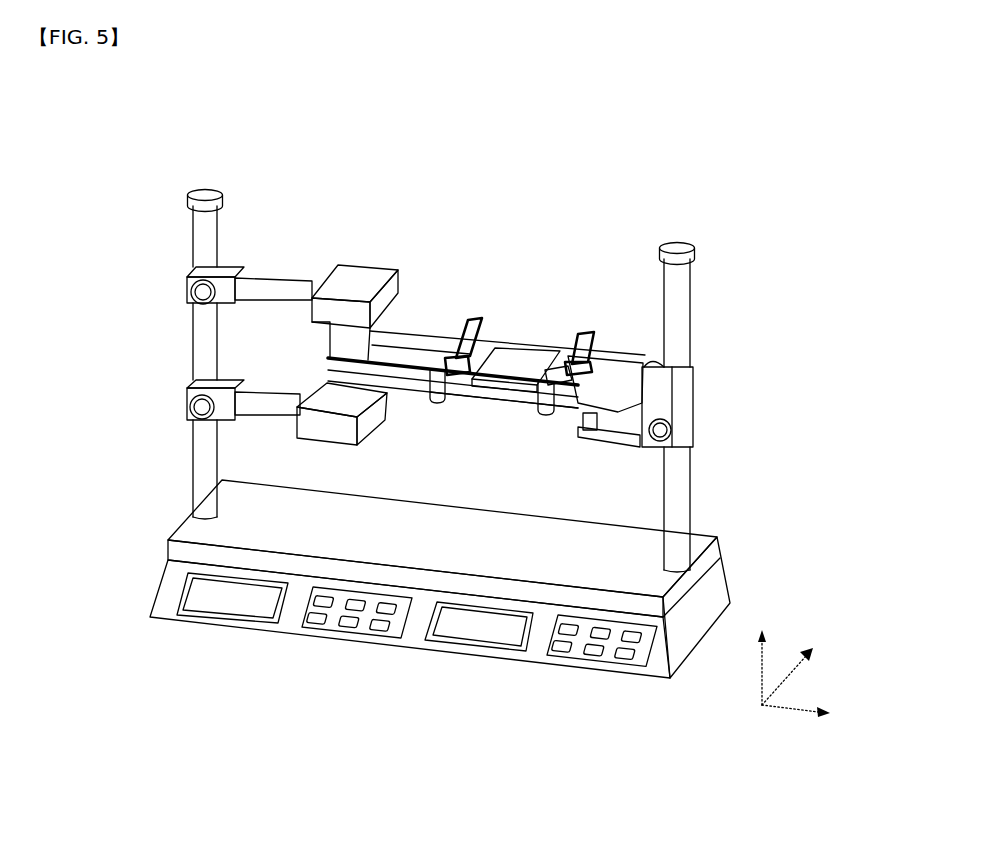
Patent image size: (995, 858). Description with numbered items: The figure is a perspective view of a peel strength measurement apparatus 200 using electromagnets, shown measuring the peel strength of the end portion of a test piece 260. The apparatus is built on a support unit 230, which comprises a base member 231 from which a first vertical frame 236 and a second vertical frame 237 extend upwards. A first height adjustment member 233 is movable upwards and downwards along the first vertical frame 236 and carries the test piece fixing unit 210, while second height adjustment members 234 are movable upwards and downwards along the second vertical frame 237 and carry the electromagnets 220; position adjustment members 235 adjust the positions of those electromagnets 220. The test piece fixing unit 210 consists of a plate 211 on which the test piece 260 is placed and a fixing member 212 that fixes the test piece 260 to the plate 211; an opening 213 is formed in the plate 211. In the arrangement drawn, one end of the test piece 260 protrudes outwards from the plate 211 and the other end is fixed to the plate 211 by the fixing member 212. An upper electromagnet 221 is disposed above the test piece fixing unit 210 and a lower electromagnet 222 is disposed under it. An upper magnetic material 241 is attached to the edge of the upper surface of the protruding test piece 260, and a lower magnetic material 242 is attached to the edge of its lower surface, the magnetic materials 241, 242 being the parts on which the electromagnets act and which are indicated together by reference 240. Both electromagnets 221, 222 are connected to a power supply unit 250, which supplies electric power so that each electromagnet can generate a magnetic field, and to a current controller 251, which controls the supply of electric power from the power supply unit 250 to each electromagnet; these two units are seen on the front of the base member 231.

The peel strength measurement apparatus 200 is at (88, 156).
The test piece fixing unit 210 is at (559, 288).
The plate 211 is at (605, 331).
The fixing member 212 is at (577, 350).
The opening 213 is at (519, 314).
The electromagnets 220 is at (428, 155).
The upper electromagnet 221 is at (340, 290).
The lower electromagnet 222 is at (423, 358).
The support unit 230 is at (135, 447).
The base member 231 is at (409, 580).
The first height adjustment member 233 is at (730, 395).
The second height adjustment members 234 is at (165, 343).
The position adjustment members 235 is at (258, 400).
The first vertical frame 236 is at (739, 408).
The second vertical frame 237 is at (208, 245).
The connection unit 240 is at (302, 383).
The upper magnetic material 241 is at (320, 341).
The lower magnetic material 242 is at (328, 402).
The power supply unit 250 is at (235, 644).
The current controller 251 is at (446, 658).
The test piece 260 is at (447, 265).